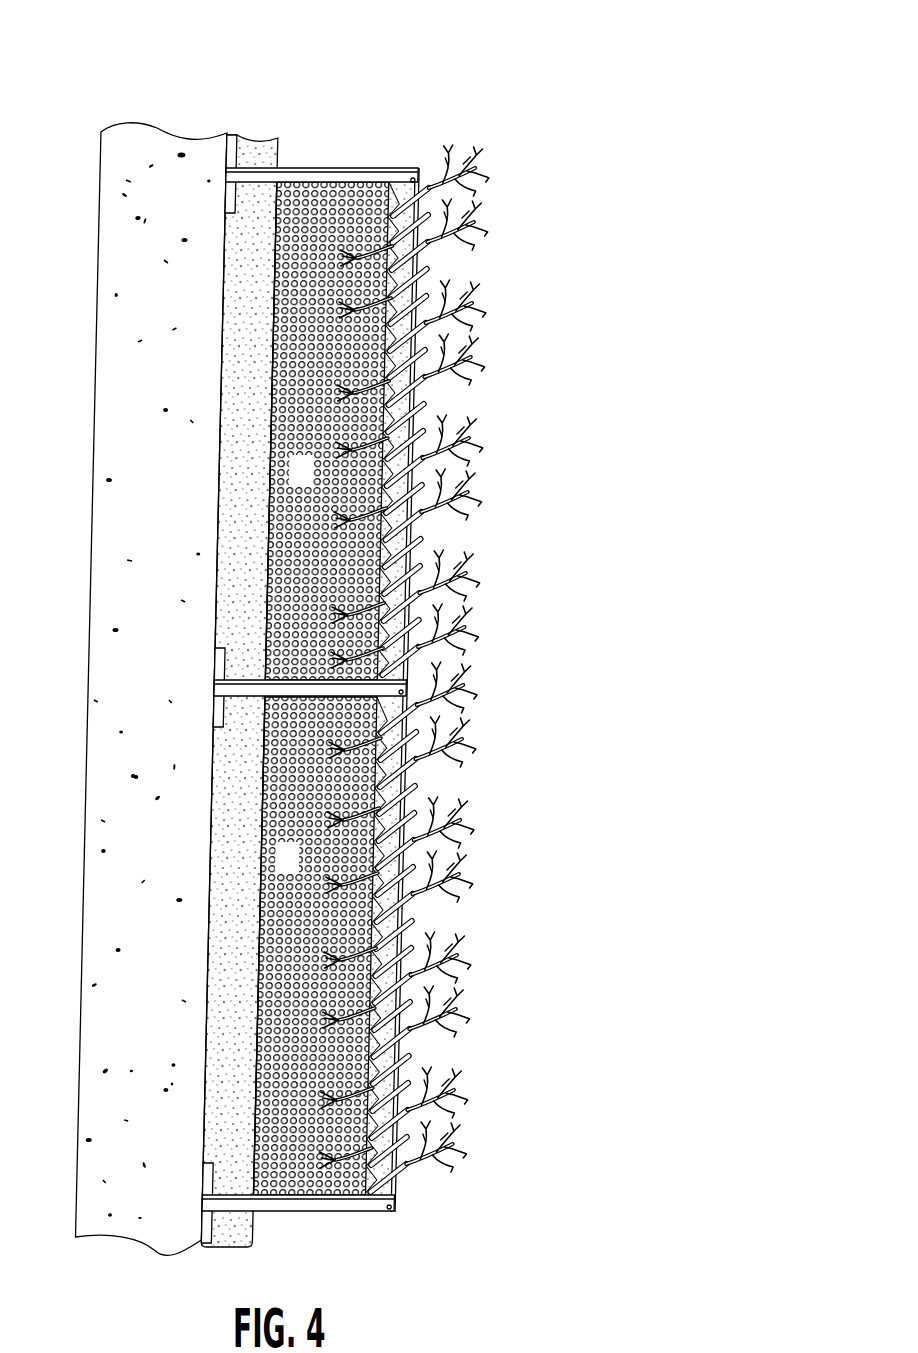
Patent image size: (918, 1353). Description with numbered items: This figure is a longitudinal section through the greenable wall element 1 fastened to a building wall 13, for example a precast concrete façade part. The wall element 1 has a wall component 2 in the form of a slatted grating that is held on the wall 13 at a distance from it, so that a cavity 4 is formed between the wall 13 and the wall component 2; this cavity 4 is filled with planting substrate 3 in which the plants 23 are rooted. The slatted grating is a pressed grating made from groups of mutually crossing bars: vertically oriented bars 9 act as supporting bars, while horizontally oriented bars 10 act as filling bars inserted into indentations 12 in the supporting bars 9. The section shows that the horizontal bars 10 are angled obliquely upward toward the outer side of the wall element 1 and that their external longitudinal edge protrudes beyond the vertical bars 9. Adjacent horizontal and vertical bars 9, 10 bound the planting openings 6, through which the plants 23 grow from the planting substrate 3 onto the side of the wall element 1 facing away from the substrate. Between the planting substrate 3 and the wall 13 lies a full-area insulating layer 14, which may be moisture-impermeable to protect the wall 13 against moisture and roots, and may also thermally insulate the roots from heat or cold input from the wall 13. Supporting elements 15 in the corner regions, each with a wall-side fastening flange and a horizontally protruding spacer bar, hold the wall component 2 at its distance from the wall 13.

The wall element 1 is at (406, 634).
The wall component 2 is at (439, 165).
The planting substrate 3 is at (308, 482).
The cavity 4 is at (340, 206).
The planting openings 6 is at (440, 195).
The bars oriented in the vertical direction 9 is at (390, 205).
The bars oriented in the horizontal direction 10 is at (437, 227).
The indentations 12 is at (407, 190).
The wall 13 is at (148, 172).
The insulating layer 14 is at (240, 322).
The supporting elements 15 is at (299, 166).
The plants 23 is at (492, 499).